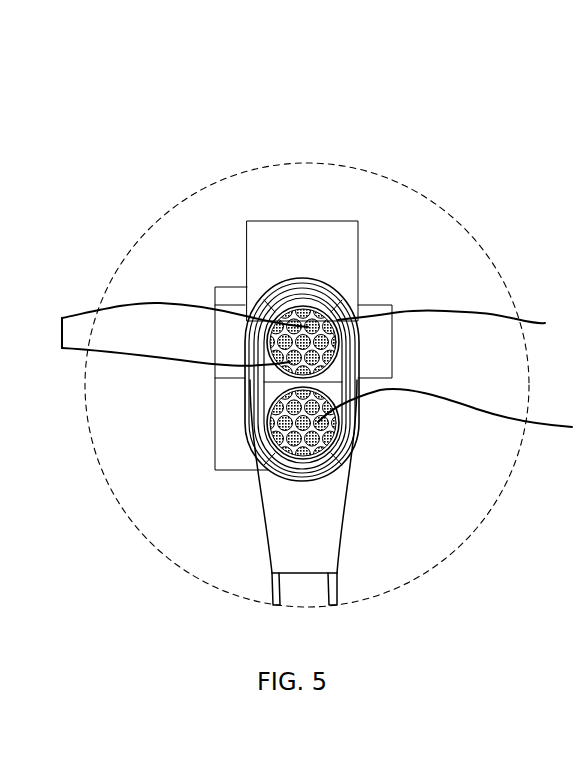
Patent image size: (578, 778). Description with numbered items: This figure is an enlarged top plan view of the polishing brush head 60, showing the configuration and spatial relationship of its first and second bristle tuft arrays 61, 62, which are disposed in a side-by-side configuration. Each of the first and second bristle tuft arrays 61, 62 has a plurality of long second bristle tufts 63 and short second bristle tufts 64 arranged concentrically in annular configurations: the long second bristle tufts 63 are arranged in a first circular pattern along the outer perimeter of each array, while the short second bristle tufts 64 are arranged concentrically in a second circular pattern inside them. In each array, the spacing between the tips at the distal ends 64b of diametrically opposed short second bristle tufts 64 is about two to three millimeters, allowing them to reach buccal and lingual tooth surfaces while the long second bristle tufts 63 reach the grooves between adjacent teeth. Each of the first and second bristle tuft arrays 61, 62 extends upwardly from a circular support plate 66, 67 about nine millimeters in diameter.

The polishing brush head 60 is at (437, 213).
The first bristle tuft array 61 is at (288, 303).
The second bristle tuft array 62 is at (355, 425).
The long second bristle tufts 63 is at (308, 332).
The short second bristle tufts 64 is at (148, 571).
The distal ends of short second bristle tufts 64b is at (62, 333).
The circular support plate 66 is at (331, 338).
The circular support plate 67 is at (320, 452).